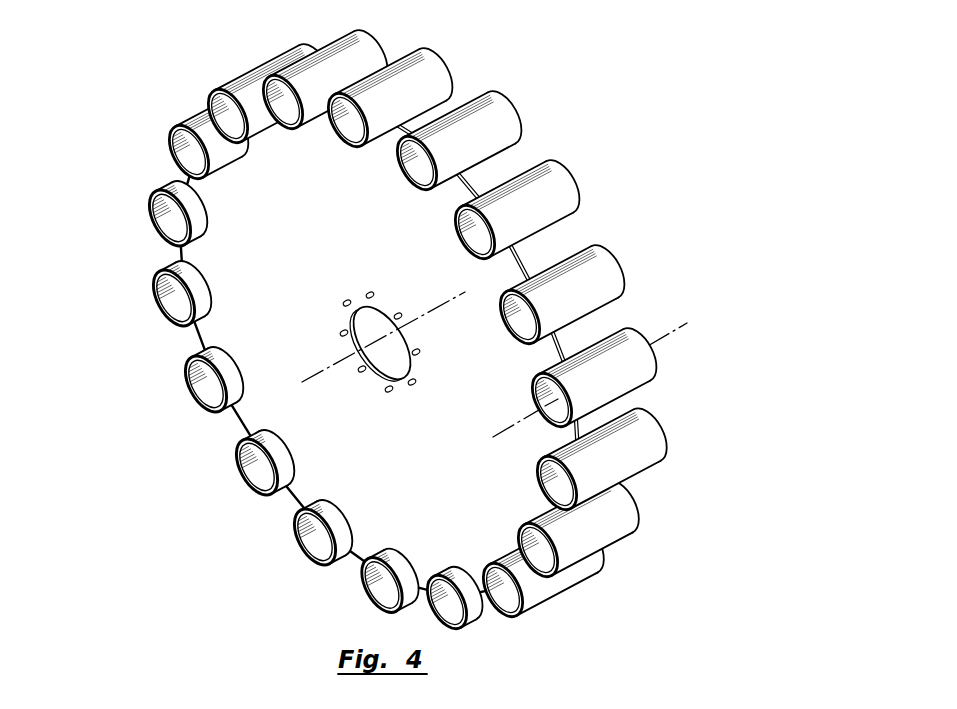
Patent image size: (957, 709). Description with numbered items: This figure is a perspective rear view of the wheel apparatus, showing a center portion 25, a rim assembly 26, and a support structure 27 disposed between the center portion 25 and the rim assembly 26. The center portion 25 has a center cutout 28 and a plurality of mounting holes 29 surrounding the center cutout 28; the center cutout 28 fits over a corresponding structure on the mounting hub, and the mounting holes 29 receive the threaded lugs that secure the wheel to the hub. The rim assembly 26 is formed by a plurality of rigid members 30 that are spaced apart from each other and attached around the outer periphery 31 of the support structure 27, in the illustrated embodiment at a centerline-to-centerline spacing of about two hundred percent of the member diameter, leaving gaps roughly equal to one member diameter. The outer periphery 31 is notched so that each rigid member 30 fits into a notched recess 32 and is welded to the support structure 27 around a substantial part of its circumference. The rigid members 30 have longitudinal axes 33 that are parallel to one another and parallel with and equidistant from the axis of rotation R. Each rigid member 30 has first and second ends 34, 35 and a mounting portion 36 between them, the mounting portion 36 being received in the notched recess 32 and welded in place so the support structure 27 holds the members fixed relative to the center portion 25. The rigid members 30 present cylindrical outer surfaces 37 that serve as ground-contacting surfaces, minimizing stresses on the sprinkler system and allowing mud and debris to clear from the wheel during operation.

The center portion 25 is at (340, 293).
The rim assembly 26 is at (152, 218).
The support structure 27 is at (287, 413).
The center cutout 28 is at (352, 328).
The mounting holes 29 is at (378, 296).
The rigid members 30 is at (585, 273).
The outer periphery 31 is at (303, 487).
The notched recesses 32 is at (408, 548).
The longitudinal axes 33 is at (673, 333).
The first end 34 is at (606, 481).
The second end 35 is at (656, 453).
The mounting portion 36 is at (640, 423).
The cylindrical outer surfaces 37 is at (473, 125).
The axis of rotation R is at (322, 368).